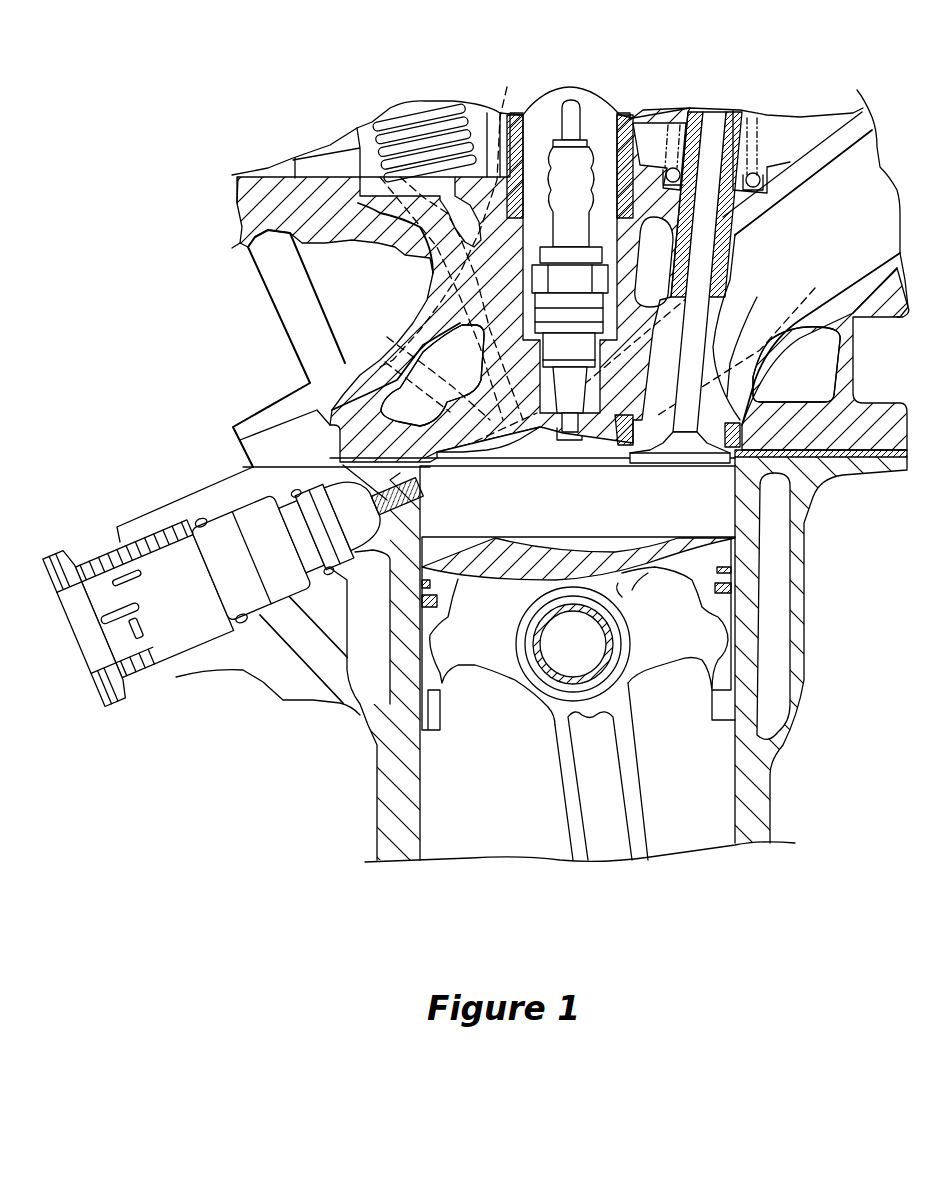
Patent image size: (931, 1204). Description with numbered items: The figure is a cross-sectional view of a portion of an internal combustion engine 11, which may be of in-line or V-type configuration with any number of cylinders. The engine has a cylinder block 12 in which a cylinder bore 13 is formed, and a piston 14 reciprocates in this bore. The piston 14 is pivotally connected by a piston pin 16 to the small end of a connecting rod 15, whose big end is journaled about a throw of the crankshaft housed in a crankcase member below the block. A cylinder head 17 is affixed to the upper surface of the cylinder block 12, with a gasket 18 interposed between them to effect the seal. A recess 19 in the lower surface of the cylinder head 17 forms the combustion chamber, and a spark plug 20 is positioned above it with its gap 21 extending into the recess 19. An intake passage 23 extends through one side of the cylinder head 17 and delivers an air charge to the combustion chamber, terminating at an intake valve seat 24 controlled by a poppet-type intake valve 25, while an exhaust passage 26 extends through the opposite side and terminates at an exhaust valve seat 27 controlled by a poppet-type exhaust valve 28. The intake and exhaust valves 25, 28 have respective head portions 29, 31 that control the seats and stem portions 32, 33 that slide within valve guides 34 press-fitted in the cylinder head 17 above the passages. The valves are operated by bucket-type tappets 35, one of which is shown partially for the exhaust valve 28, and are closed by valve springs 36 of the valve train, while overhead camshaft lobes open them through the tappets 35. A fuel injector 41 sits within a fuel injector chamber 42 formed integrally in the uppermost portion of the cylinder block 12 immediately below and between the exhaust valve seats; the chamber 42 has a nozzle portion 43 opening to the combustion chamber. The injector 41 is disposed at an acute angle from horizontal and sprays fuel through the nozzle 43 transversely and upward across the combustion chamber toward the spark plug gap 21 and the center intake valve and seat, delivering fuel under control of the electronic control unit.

The engine 11 is at (162, 327).
The cylinder block 12 is at (310, 707).
The cylinder bore 13 is at (423, 798).
The piston 14 is at (492, 653).
The connecting rod 15 is at (620, 817).
The piston pin 16 is at (622, 653).
The cylinder head 17 is at (262, 213).
The gasket 18 is at (847, 457).
The recess 19 is at (563, 480).
The spark plug 20 is at (572, 202).
The spark plug gap 21 is at (582, 453).
The intake passage 23 is at (848, 163).
The intake valve seat 24 is at (733, 467).
The intake valve 25 is at (745, 318).
The exhaust passage 26 is at (318, 273).
The exhaust valve seat 27 is at (480, 440).
The exhaust valve 28 is at (428, 253).
The head portion 29 is at (700, 420).
The head portion 31 is at (523, 440).
The stem portion 32 is at (730, 290).
The stem portion 33 is at (432, 375).
The valve guide 34 is at (507, 100).
The tappet 35 is at (390, 117).
The valve spring 36 is at (465, 103).
The fuel injector 41 is at (233, 597).
The fuel injector chamber 42 is at (237, 475).
The nozzle portion 43 is at (420, 473).